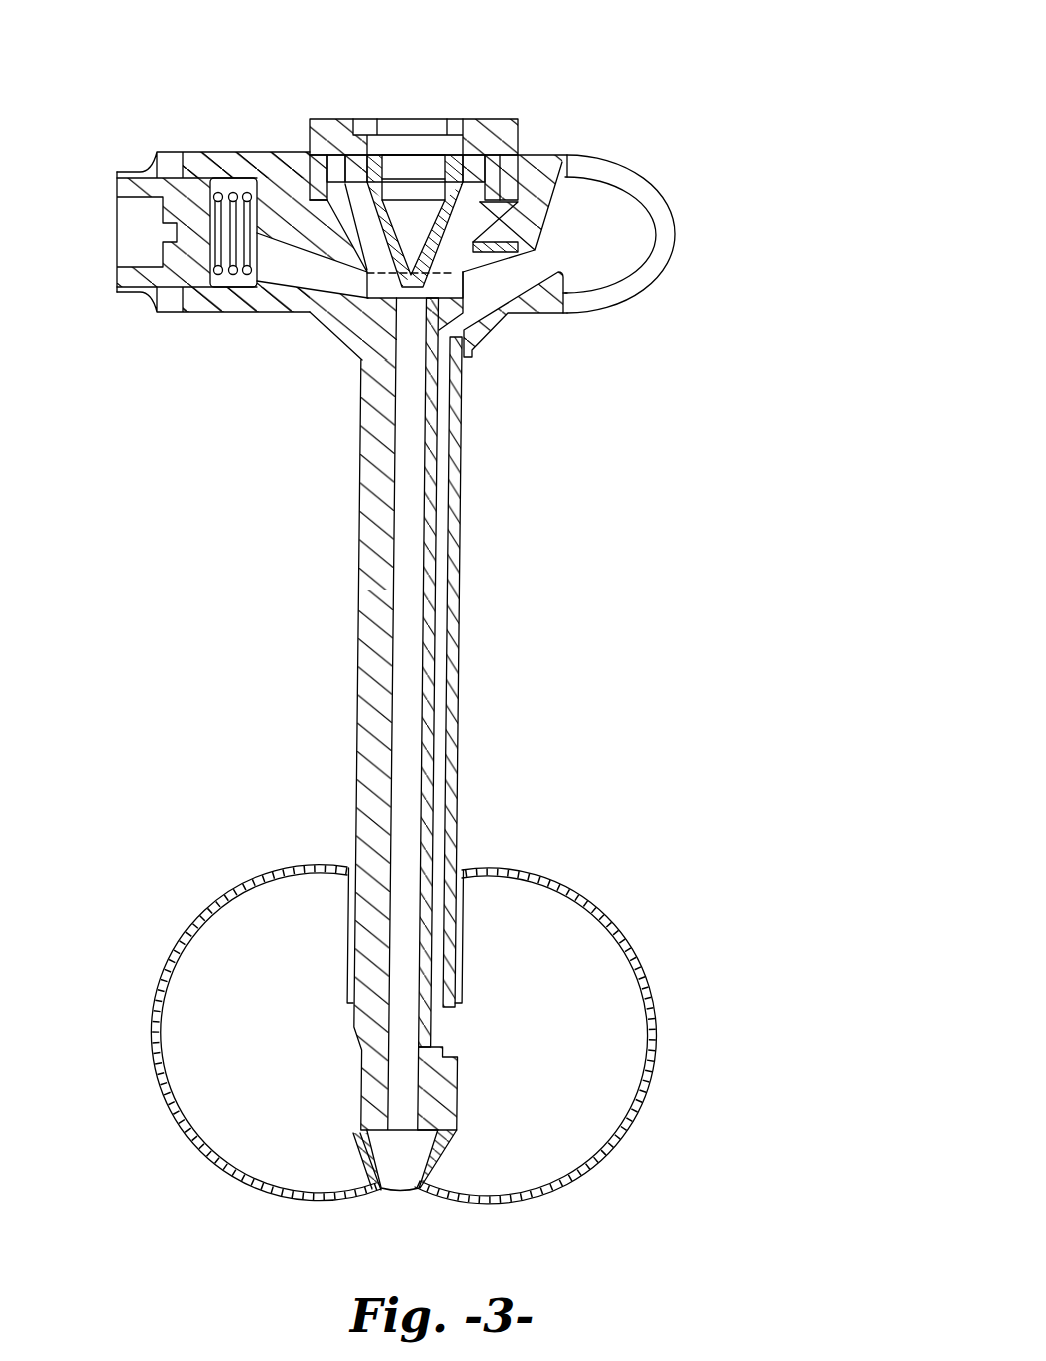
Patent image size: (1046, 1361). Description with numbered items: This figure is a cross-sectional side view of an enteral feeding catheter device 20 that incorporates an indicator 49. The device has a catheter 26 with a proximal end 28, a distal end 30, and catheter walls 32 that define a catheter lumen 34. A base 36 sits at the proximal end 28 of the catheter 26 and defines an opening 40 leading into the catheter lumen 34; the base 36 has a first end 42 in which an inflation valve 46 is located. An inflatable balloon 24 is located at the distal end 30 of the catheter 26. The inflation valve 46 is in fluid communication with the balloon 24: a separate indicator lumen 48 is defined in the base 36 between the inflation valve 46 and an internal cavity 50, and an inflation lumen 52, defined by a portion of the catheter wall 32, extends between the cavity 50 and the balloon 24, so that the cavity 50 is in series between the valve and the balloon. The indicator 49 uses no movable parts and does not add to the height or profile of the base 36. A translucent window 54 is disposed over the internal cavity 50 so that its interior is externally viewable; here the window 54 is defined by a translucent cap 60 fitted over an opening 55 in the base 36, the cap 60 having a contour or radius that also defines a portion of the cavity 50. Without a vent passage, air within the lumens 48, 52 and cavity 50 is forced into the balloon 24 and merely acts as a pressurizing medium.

The enteral feeding catheter device 20 is at (664, 57).
The inflatable balloon 24 is at (666, 1040).
The catheter 26 is at (610, 512).
The proximal end 28 is at (342, 380).
The distal end 30 is at (419, 1194).
The catheter walls 32 is at (463, 464).
The catheter lumen 34 is at (389, 1209).
The base 36 is at (307, 290).
The opening 40 is at (418, 113).
The first end 42 is at (180, 142).
The inflation valve 46 is at (120, 172).
The indicator lumen 48 is at (300, 270).
The indicator 49 is at (722, 185).
The internal cavity 50 is at (640, 243).
The inflation lumen 52 is at (461, 704).
The translucent window 54 is at (648, 178).
The opening 55 is at (590, 222).
The translucent cap 60 is at (673, 260).